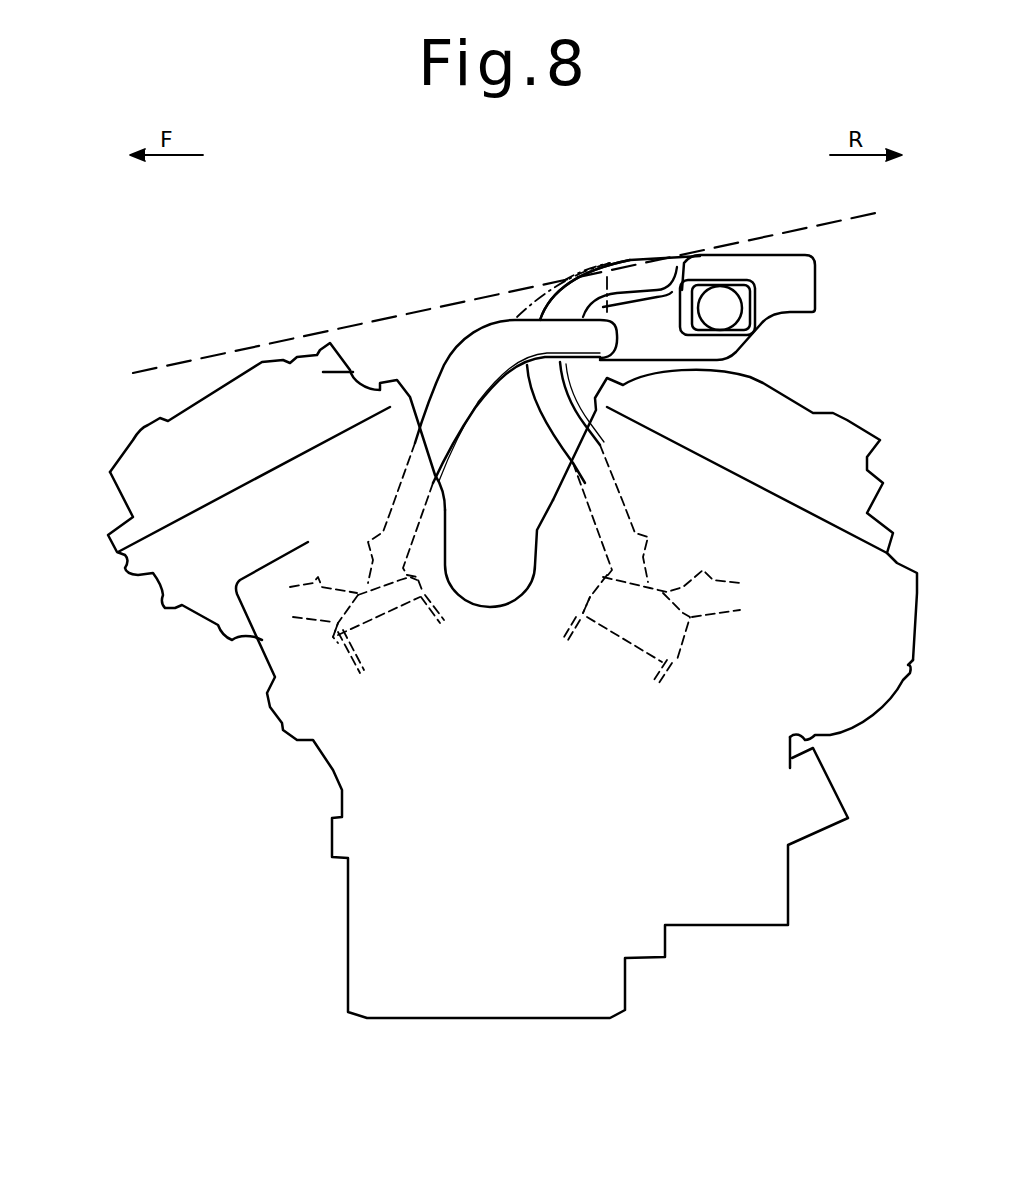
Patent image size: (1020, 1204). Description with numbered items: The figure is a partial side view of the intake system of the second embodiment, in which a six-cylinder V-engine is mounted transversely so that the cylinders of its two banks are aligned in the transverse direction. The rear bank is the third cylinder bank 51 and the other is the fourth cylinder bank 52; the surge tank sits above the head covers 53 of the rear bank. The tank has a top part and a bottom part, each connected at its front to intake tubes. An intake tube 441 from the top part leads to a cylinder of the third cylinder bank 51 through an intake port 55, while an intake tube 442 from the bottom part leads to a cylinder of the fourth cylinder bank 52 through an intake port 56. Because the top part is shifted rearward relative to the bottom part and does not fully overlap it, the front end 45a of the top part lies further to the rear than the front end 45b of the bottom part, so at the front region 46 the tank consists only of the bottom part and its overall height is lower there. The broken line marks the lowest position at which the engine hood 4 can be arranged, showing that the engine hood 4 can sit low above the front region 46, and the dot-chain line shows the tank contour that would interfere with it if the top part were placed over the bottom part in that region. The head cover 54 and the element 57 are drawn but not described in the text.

The engine hood 4 is at (519, 274).
The intake tube 441 is at (565, 304).
The intake tube 442 is at (455, 418).
The front end of the top part 45a is at (677, 276).
The front end of the bottom part 45b is at (592, 310).
The front region of the surge tank 46 is at (639, 252).
The third cylinder bank 51 is at (613, 682).
The fourth cylinder bank 52 is at (433, 645).
The head cover 53 is at (858, 497).
The front cylinder head 54 is at (137, 488).
The intake port 55 is at (607, 505).
The intake port 56 is at (393, 516).
The intake port 57 is at (342, 633).